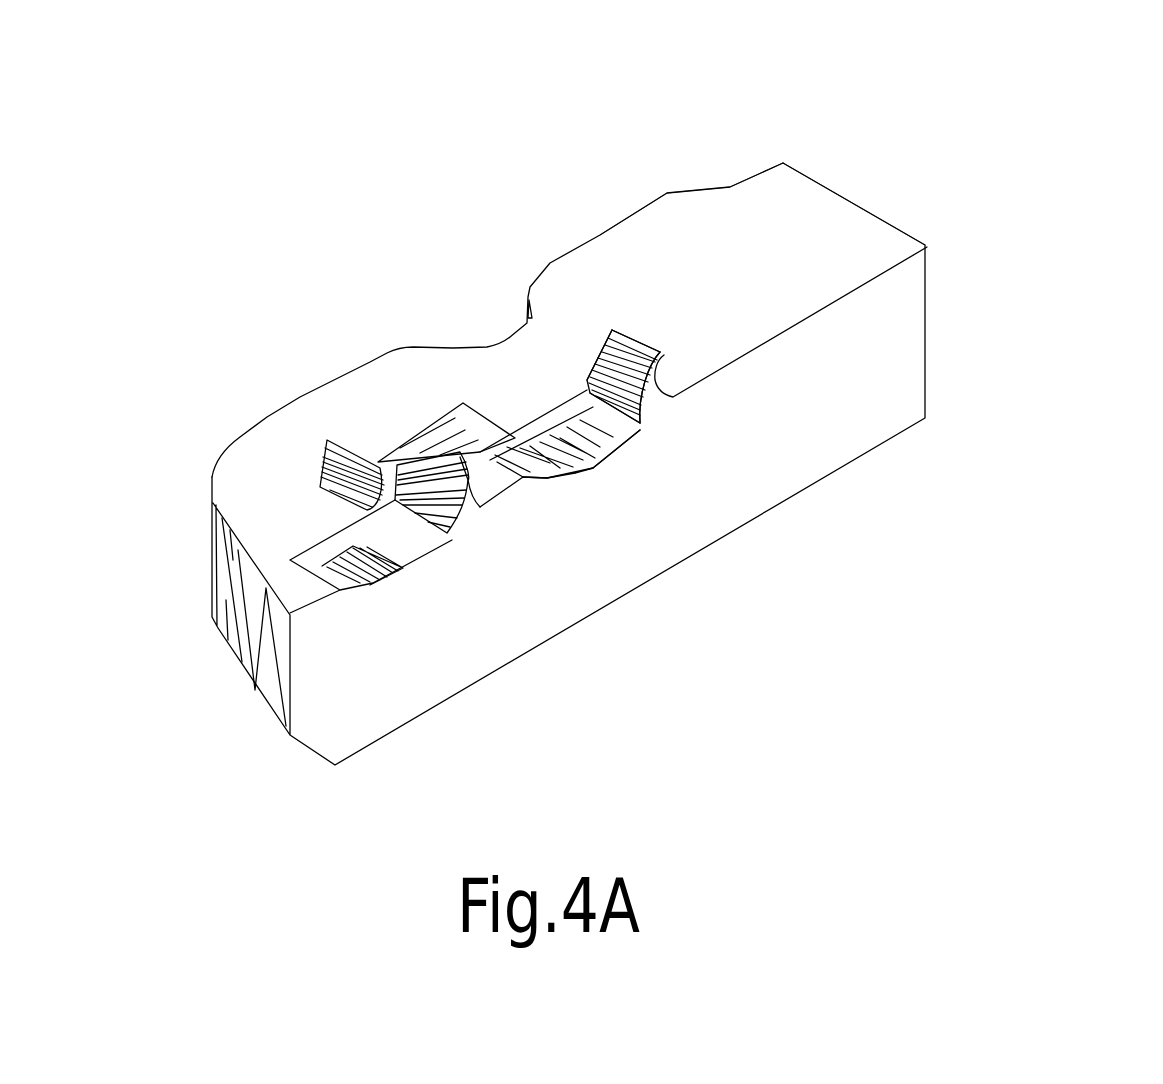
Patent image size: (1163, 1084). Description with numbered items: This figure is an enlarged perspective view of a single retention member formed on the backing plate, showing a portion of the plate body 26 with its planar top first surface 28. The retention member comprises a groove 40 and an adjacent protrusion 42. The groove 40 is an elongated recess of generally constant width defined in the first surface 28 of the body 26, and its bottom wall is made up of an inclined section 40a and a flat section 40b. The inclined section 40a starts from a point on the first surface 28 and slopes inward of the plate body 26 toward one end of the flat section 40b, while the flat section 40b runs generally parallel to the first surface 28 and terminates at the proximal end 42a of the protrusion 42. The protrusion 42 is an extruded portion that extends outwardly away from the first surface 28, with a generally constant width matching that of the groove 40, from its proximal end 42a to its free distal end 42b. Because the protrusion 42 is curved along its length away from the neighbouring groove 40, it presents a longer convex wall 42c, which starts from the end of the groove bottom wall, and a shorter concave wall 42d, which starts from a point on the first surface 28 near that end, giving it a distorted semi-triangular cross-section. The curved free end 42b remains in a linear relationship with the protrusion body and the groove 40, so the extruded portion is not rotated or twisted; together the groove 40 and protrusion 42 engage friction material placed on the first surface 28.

The body 26 is at (903, 344).
The first surface 28 is at (705, 265).
The groove 40 is at (613, 457).
The inclined section 40a is at (556, 474).
The flat section 40b is at (592, 475).
The protrusion 42 is at (662, 353).
The proximal end 42a is at (667, 413).
The free distal end 42b is at (637, 337).
The convex wall 42c is at (597, 351).
The concave wall 42d is at (660, 388).